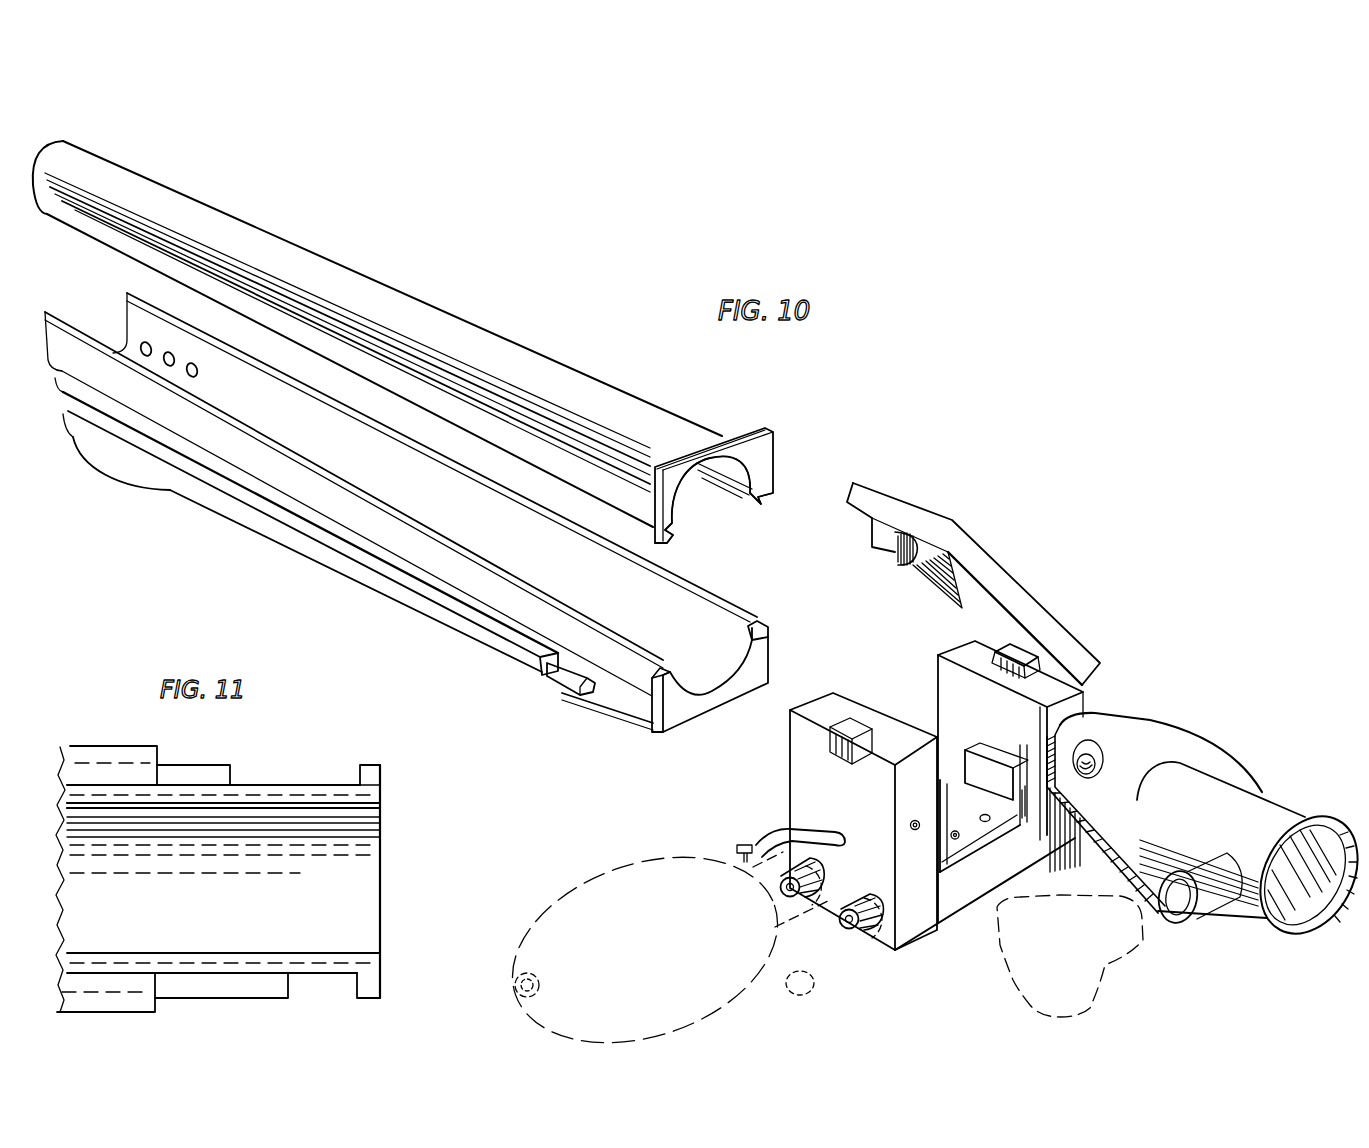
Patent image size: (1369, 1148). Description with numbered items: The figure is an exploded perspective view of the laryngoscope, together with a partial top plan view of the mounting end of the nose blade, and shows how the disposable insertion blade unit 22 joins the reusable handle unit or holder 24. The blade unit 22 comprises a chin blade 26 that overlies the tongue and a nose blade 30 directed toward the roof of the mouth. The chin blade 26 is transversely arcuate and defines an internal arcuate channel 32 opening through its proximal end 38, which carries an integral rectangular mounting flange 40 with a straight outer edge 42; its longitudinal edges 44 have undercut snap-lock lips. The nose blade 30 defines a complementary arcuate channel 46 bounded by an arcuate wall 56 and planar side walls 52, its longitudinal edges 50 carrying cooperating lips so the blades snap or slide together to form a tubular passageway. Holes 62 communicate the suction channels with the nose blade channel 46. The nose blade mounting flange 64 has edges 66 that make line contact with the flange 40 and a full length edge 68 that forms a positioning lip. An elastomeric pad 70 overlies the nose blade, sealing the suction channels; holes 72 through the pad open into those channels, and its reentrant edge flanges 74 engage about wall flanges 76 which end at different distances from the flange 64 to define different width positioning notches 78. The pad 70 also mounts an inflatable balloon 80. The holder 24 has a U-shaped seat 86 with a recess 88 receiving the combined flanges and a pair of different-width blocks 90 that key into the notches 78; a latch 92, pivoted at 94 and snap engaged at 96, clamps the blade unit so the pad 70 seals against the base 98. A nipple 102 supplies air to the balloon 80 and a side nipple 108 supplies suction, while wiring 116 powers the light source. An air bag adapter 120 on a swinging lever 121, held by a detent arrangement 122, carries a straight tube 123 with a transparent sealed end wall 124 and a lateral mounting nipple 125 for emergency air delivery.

In FIG. 10, the disposable insertion blade unit 22 is at (157, 482).
In FIG. 10, the handle unit or holder 24 is at (939, 941).
In FIG. 10, the chin blade 26 is at (352, 257).
In FIG. 10, the nose blade 30 is at (433, 618).
In FIG. 10, the arcuate channel 32 is at (731, 473).
In FIG. 10, the proximal end 38 is at (687, 512).
In FIG. 10, the mounting flange 40 is at (778, 447).
In FIG. 10, the straight outer edge 42 is at (743, 433).
In FIG. 10, the longitudinal edges 44 is at (757, 494).
In FIG. 10, the arcuate internal channel 46 is at (682, 602).
In FIG. 11, the arcuate internal channel 46 is at (382, 878).
In FIG. 10, the longitudinal edges 50 is at (580, 537).
In FIG. 11, the longitudinal edges 50 is at (307, 950).
In FIG. 10, the side walls 52 is at (363, 527).
In FIG. 10, the arcuate wall 56 is at (710, 667).
In FIG. 10, the holes 62 is at (197, 377).
In FIG. 10, the mounting flange 64 is at (692, 714).
In FIG. 11, the mounting flange 64 is at (386, 982).
In FIG. 10, the edges 66 is at (770, 628).
In FIG. 11, the edges 66 is at (370, 777).
In FIG. 10, the full length edge 68 is at (678, 726).
In FIG. 10, the elastomeric pad 70 is at (621, 705).
In FIG. 10, the holes 72 is at (955, 840).
In FIG. 10, the reentrant edge flanges 74 is at (463, 629).
In FIG. 11, the reentrant edge flanges 74 is at (112, 752).
In FIG. 10, the wall flanges 76 is at (558, 682).
In FIG. 11, the wall flanges 76 is at (203, 770).
In FIG. 11, the positioning notches 78 is at (315, 780).
In FIG. 10, the inflatable balloon 80 is at (197, 495).
In FIG. 10, the U-shaped seat 86 is at (932, 731).
In FIG. 10, the recess 88 is at (1023, 822).
In FIG. 10, the blocks 90 is at (990, 764).
In FIG. 10, the latch 92 is at (996, 555).
In FIG. 10, the pivot 94 is at (1044, 667).
In FIG. 10, the snap engagement 96 is at (870, 553).
In FIG. 10, the base 98 is at (966, 817).
In FIG. 10, the external mounting nipple 102 is at (779, 889).
In FIG. 10, the side mounted nipple 108 is at (866, 926).
In FIG. 10, the wiring 116 is at (763, 833).
In FIG. 10, the air bag adapter 120 is at (1264, 777).
In FIG. 10, the swinging panel or lever 121 is at (1164, 742).
In FIG. 10, the detent arrangement 122 is at (915, 832).
In FIG. 10, the straight tube 123 is at (1260, 811).
In FIG. 10, the end wall 124 is at (1313, 908).
In FIG. 10, the mounting nipple 125 is at (1213, 895).